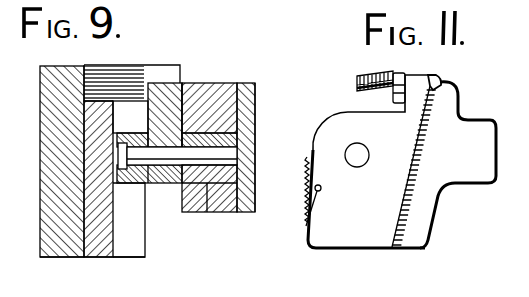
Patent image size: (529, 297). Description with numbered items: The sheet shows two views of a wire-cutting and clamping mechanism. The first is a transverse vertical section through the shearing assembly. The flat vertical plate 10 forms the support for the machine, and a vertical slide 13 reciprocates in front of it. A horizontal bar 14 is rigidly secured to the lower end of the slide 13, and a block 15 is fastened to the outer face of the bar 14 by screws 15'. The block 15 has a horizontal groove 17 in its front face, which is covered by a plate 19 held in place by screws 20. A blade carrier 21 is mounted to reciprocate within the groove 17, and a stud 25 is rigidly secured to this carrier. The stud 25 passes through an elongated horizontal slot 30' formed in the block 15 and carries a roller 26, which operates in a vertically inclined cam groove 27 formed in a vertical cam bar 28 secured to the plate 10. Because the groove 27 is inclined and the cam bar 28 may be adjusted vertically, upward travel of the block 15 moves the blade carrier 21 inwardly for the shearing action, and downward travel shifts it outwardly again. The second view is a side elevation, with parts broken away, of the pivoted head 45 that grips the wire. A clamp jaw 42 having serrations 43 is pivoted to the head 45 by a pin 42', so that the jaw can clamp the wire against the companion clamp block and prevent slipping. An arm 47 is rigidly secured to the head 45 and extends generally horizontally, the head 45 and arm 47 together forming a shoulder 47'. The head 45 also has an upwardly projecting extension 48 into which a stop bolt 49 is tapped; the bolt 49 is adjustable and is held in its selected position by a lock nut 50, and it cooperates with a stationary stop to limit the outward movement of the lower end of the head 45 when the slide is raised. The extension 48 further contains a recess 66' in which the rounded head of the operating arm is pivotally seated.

In FIG. 9, the vertical plate 10 is at (40, 106).
In FIG. 9, the vertical slide 13 is at (141, 64).
In FIG. 9, the horizontal bar 14 is at (173, 83).
In FIG. 9, the block 15 is at (219, 89).
In FIG. 9, the screws 15' is at (202, 96).
In FIG. 9, the horizontal groove 17 is at (210, 213).
In FIG. 9, the plate 19 is at (256, 126).
In FIG. 9, the screws 20 is at (258, 104).
In FIG. 9, the blade carrier 21 is at (240, 138).
In FIG. 9, the stud 25 is at (248, 158).
In FIG. 9, the roller 26 is at (130, 190).
In FIG. 9, the cam groove 27 is at (133, 248).
In FIG. 9, the cam bar 28 is at (101, 258).
In FIG. 9, the elongated horizontal slot 30' is at (153, 177).
In FIG. 11, the clamp jaw 42 is at (283, 200).
In FIG. 11, the pin 42' is at (301, 222).
In FIG. 11, the serrations 43 is at (310, 172).
In FIG. 11, the head 45 is at (343, 119).
In FIG. 11, the arm 47 is at (464, 165).
In FIG. 11, the shoulder 47' is at (444, 217).
In FIG. 11, the extension 48 is at (428, 76).
In FIG. 11, the stop bolt 49 is at (358, 82).
In FIG. 11, the lock nut 50 is at (392, 74).
In FIG. 11, the recess 66' is at (466, 81).